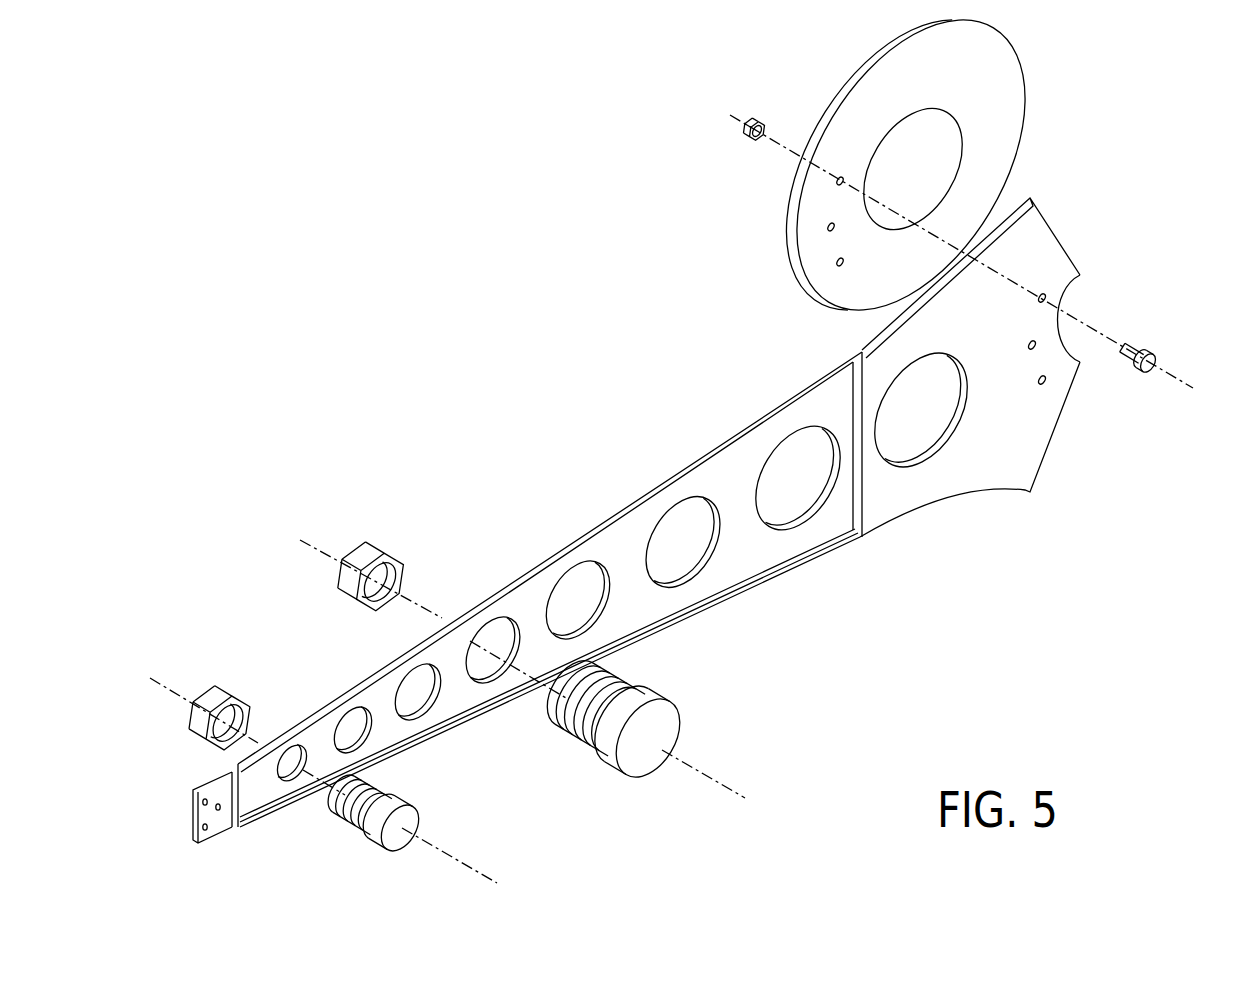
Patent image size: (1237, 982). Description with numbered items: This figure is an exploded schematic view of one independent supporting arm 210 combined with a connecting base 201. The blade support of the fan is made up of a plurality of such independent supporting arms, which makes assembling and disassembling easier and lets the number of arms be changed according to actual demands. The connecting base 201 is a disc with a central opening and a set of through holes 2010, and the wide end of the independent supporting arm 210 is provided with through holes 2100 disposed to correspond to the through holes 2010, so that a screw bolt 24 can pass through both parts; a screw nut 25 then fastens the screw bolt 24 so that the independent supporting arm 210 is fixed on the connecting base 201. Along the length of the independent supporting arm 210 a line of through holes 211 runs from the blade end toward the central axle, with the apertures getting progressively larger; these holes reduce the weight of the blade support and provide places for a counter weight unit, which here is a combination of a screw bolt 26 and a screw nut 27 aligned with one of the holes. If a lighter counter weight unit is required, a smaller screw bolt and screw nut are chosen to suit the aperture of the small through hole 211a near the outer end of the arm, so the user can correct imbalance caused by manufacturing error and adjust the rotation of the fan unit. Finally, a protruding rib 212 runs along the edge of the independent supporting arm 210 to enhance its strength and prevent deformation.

The connecting base 201 is at (1003, 117).
The through holes 2010 is at (829, 224).
The through holes 2100 is at (1078, 275).
The independent supporting arm 210 is at (1027, 458).
The through holes 211 is at (688, 552).
The through hole 211a is at (297, 755).
The protruding rib 212 is at (700, 462).
The screw bolt 24 is at (1158, 362).
The screw nut 25 is at (754, 121).
The screw bolt 26 is at (665, 728).
The screw nut 27 is at (390, 560).